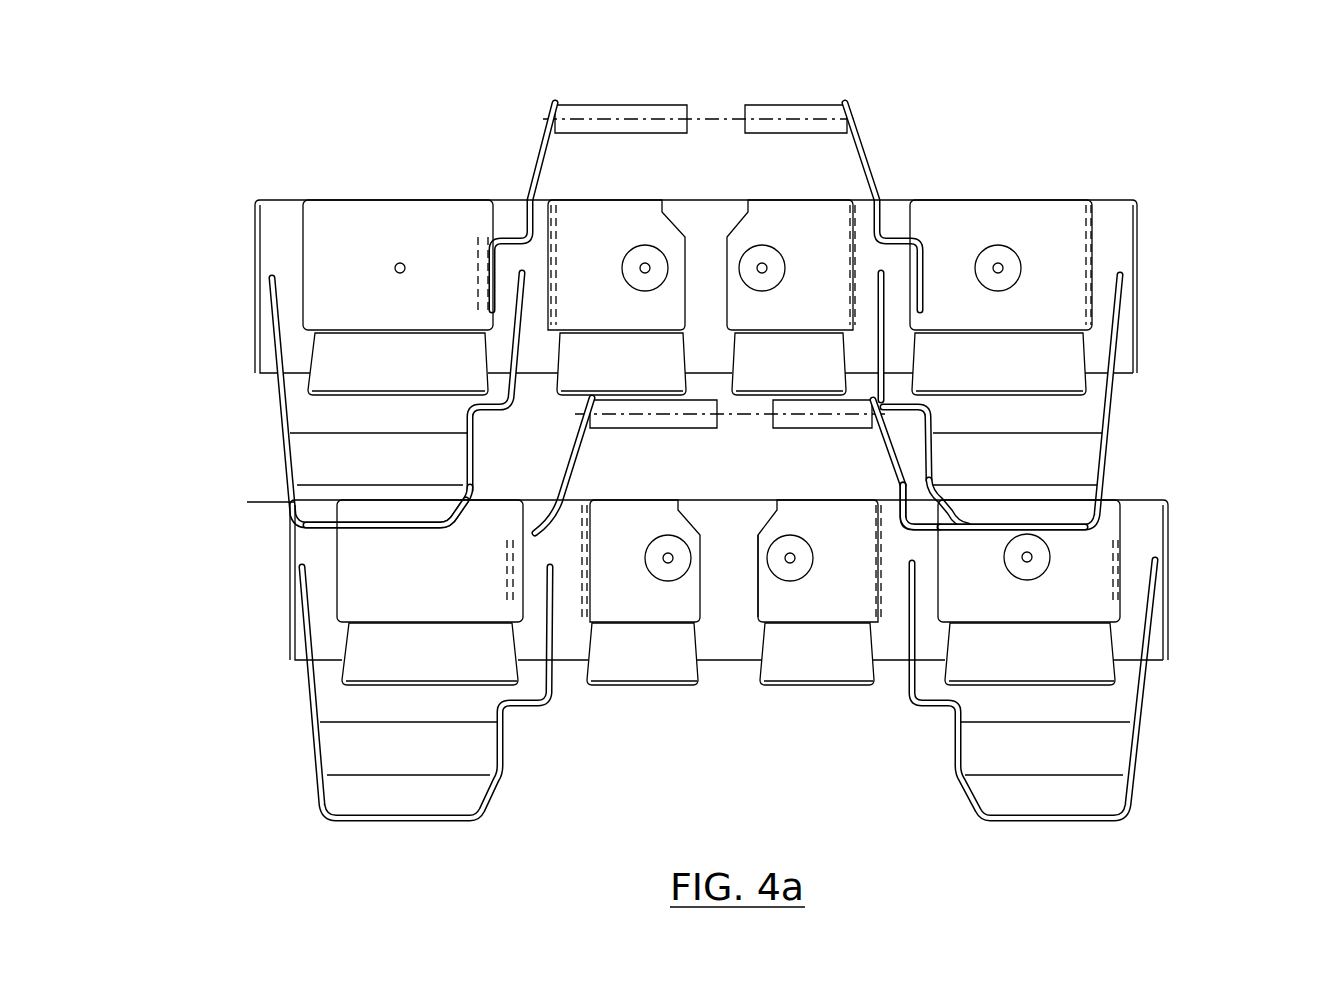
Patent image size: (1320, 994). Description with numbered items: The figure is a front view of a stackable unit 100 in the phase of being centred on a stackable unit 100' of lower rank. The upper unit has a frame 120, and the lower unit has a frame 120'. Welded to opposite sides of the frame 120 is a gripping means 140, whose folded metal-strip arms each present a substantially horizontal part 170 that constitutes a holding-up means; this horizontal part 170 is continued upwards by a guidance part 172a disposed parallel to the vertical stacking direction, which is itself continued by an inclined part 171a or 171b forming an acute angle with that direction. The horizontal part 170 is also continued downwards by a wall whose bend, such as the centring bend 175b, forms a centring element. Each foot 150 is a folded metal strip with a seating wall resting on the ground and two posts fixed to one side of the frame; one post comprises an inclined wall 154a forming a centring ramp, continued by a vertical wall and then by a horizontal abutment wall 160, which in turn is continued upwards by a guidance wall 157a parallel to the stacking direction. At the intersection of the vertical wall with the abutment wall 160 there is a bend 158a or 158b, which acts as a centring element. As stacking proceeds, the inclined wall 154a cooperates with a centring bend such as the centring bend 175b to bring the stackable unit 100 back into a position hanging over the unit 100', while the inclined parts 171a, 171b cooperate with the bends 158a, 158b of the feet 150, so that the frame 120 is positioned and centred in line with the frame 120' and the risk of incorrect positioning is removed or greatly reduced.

The gripping means 140 is at (632, 103).
The frame 120 is at (790, 297).
The stackable unit 100 is at (784, 342).
The stackable unit of lower rank 100' is at (783, 637).
The frame of the stackable unit of lower rank 120' is at (803, 592).
The foot 150 is at (1143, 420).
The guidance wall 157a is at (877, 362).
The bend 158a is at (875, 410).
The bend 158b is at (512, 403).
The abutment wall 160 is at (874, 496).
The horizontal part 170 is at (915, 518).
The inclined part 171a is at (818, 466).
The inclined part 171b is at (557, 462).
The guidance part 172a is at (905, 522).
The centring bend 175b is at (513, 535).
The inclined wall 154a is at (910, 510).